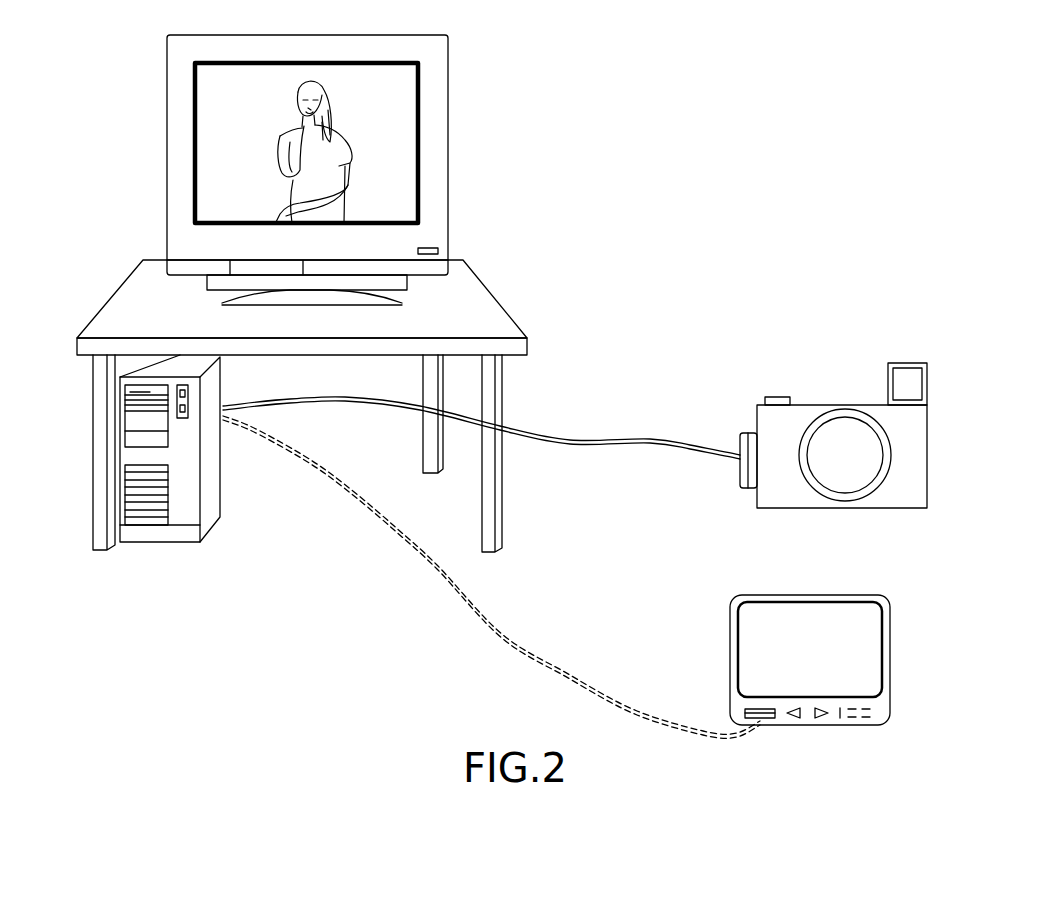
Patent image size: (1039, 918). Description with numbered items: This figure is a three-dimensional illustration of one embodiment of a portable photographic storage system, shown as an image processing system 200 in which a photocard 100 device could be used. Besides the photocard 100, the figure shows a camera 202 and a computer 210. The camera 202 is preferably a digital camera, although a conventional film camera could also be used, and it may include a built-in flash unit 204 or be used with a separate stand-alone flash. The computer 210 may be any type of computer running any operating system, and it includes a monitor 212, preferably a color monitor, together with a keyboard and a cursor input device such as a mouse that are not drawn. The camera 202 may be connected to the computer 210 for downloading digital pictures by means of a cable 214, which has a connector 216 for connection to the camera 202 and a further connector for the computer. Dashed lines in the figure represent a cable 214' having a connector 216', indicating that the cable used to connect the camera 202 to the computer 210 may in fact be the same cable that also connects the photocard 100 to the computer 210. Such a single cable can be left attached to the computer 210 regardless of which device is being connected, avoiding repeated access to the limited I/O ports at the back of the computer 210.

The photocard 100 is at (933, 645).
The image processing system 200 is at (723, 234).
The camera 202 is at (928, 462).
The built-in flash unit 204 is at (913, 378).
The computer 210 is at (210, 490).
The monitor 212 is at (448, 114).
The cable 214 is at (481, 416).
The cable 214' is at (491, 577).
The connector 216 is at (753, 420).
The connector 216' is at (794, 745).